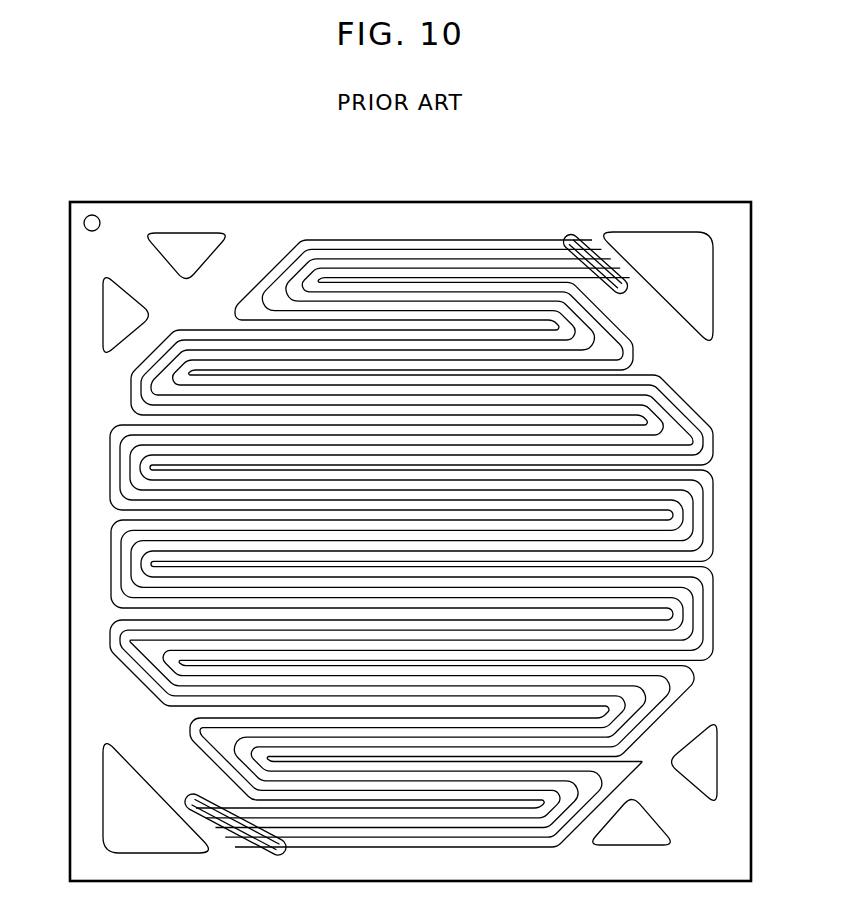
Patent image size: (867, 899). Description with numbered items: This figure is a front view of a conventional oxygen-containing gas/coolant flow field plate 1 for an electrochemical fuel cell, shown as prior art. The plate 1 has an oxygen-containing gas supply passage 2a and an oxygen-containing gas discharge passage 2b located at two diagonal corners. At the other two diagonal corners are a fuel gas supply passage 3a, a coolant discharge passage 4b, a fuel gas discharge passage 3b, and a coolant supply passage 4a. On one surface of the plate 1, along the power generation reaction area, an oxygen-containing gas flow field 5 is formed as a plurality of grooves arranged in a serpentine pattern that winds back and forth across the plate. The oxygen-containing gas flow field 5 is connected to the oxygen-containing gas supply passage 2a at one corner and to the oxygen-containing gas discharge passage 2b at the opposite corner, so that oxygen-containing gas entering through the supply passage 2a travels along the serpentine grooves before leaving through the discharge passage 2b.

The oxygen-containing gas/coolant flow field plate 1 is at (652, 198).
The oxygen-containing gas supply passage 2a is at (155, 798).
The oxygen-containing gas discharge passage 2b is at (658, 286).
The fuel gas supply passage 3a is at (694, 763).
The fuel gas discharge passage 3b is at (187, 255).
The coolant supply passage 4a is at (125, 315).
The coolant discharge passage 4b is at (632, 822).
The oxygen-containing gas flow field 5 is at (400, 278).